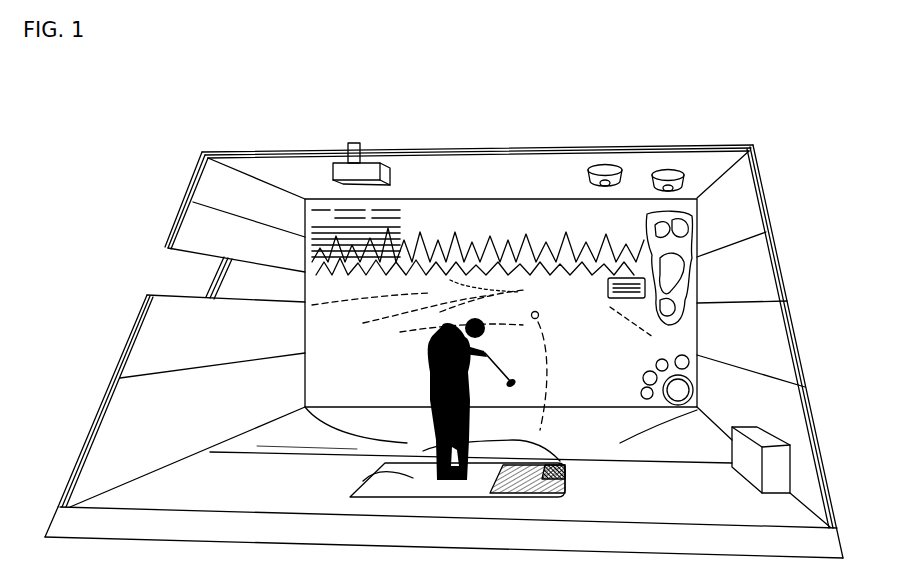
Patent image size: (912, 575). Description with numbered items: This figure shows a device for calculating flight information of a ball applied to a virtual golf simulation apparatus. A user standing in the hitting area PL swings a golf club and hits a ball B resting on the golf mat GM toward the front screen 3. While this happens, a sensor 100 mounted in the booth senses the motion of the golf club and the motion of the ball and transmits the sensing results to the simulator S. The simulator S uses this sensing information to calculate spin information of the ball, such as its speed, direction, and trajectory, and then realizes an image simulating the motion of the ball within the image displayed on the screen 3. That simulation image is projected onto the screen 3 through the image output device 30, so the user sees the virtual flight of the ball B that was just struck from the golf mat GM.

The screen 3 is at (704, 333).
The image output device 30 is at (390, 173).
The sensor 100 is at (612, 168).
The ball B is at (539, 318).
The hitting area PL is at (382, 463).
The golf mat GM is at (576, 481).
The simulator S is at (767, 437).